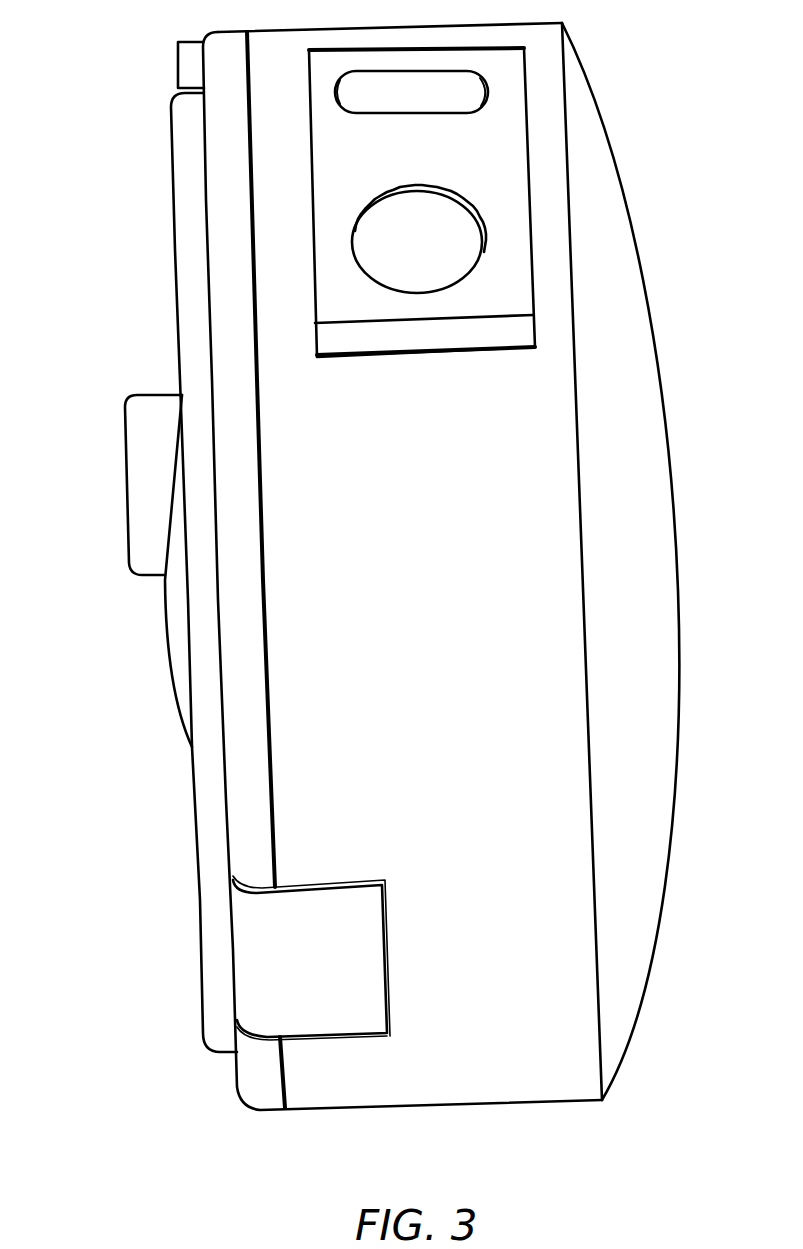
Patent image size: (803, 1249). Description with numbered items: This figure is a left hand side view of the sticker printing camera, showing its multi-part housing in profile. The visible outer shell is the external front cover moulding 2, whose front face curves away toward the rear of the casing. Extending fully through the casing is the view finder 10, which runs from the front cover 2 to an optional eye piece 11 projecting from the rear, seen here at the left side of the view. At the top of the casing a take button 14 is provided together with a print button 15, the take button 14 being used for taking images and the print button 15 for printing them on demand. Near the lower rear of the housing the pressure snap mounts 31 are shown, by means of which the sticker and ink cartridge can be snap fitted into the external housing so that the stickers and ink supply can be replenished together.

The external front cover moulding 2 is at (647, 462).
The view finder 10 is at (127, 488).
The eye piece 11 is at (140, 432).
The take button 14 is at (448, 247).
The print button 15 is at (455, 97).
The pressure snap mounts 31 is at (347, 925).